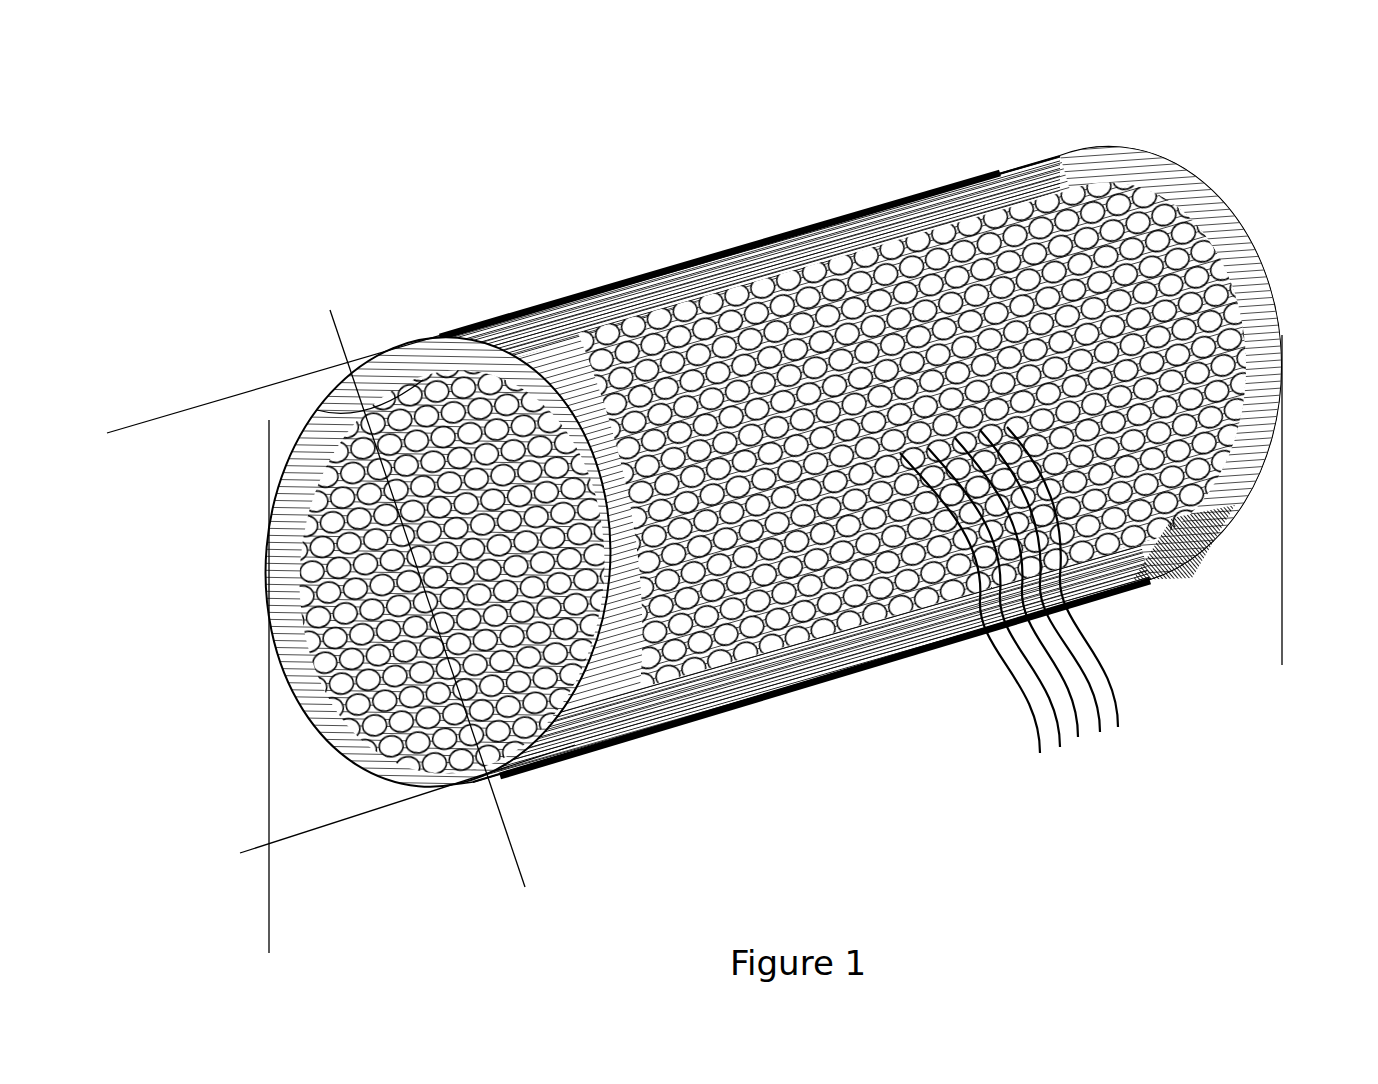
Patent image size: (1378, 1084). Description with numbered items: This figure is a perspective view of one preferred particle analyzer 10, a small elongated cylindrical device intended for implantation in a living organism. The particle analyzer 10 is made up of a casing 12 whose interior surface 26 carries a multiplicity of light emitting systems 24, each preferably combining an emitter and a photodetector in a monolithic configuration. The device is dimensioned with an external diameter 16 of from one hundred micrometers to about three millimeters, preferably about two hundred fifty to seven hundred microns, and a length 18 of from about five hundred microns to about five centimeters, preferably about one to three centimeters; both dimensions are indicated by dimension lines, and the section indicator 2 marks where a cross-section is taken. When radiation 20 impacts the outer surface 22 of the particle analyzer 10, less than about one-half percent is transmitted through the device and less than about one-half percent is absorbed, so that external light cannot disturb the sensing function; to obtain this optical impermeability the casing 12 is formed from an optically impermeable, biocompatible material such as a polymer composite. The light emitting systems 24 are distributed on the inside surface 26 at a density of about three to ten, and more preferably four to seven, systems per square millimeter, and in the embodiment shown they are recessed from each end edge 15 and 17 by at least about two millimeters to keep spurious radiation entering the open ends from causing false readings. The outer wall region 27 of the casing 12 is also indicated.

The section line 2- 2 is at (461, 593).
The particle analyzer 10 is at (784, 130).
The casing 12 is at (1185, 560).
The end edge 15 is at (342, 767).
The external diameter 16 is at (132, 430).
The end edge 17 is at (1263, 487).
The length 18 is at (1278, 612).
The radiation 20 is at (1009, 611).
The outer surface 22 is at (782, 434).
The light emitting systems 24 is at (961, 259).
The interior surface 26 is at (317, 410).
The outer surface 27 is at (937, 183).